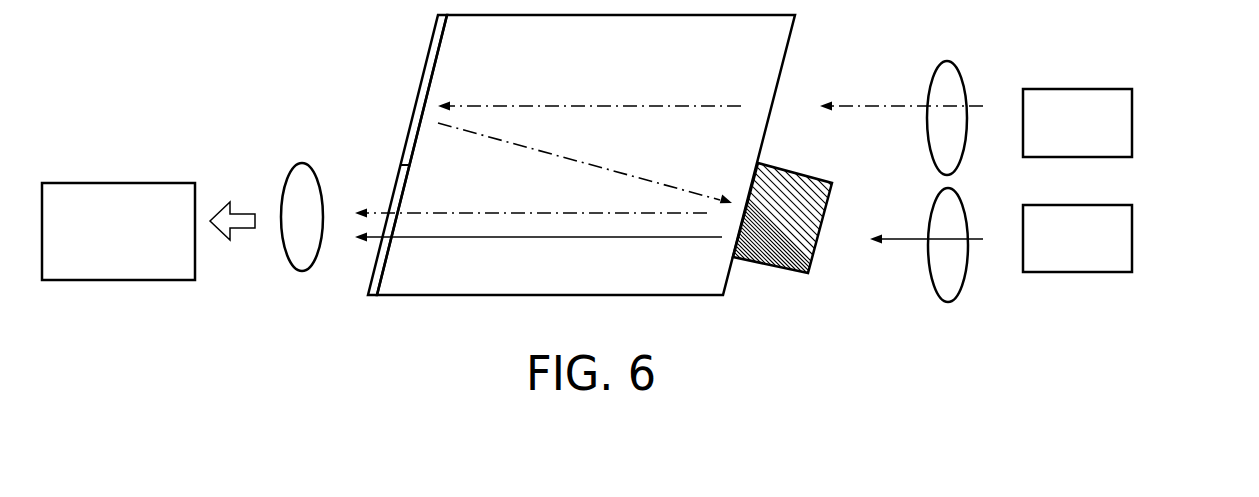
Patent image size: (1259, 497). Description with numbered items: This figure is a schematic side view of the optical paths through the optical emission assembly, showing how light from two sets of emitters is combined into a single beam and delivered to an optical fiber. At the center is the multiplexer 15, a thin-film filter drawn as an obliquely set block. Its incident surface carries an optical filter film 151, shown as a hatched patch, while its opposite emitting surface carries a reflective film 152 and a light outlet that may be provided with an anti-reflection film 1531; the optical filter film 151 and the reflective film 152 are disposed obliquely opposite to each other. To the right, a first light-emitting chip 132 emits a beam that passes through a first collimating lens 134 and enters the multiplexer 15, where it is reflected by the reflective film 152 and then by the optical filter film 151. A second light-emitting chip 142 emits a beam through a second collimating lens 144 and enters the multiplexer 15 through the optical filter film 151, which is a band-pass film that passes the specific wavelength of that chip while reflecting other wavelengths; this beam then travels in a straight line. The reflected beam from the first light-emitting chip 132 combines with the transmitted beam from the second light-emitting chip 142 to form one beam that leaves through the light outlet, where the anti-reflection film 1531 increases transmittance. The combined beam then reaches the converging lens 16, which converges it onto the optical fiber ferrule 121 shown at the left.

The multiplexer 15 is at (323, 77).
The reflective film 152 is at (423, 82).
The anti-reflection film 1531 is at (392, 178).
The optical filter film 151 is at (767, 265).
The optical fiber ferrule 121 is at (115, 280).
The converging lens 16 is at (302, 272).
The first collimating lens 134 is at (960, 72).
The second collimating lens 144 is at (948, 302).
The first light-emitting chip 132 is at (1133, 110).
The second light-emitting chip 142 is at (1133, 255).